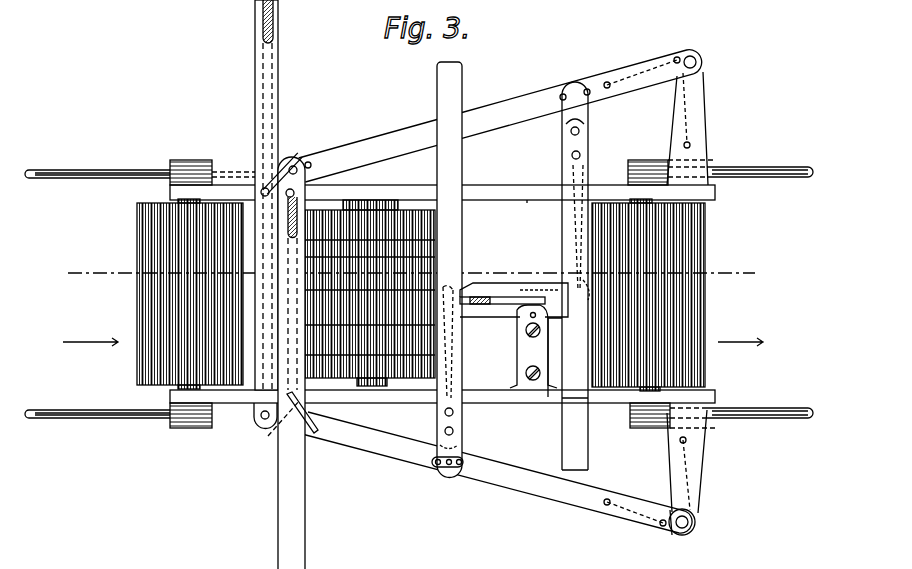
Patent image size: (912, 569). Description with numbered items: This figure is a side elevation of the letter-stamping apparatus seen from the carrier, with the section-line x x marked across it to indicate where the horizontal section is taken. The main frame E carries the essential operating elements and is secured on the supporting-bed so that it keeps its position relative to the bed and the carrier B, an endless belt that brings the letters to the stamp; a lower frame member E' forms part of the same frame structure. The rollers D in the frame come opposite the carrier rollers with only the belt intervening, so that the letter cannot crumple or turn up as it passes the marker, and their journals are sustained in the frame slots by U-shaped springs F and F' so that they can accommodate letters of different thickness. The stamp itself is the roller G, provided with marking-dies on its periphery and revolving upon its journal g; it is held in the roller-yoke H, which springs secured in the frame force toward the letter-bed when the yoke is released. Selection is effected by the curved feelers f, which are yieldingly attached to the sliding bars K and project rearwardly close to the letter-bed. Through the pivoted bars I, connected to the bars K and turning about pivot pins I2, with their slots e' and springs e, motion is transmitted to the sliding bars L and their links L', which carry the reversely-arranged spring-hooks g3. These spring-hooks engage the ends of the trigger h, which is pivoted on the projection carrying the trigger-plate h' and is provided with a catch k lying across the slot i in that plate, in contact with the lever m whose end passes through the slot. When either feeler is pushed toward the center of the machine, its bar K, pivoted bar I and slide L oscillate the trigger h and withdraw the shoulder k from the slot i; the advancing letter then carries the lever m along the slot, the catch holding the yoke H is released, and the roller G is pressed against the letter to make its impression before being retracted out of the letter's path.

The section-line x is at (409, 275).
The roller D is at (167, 305).
The roller-stamp G is at (410, 380).
The main frame E is at (442, 185).
The lower frame beam E' is at (442, 410).
The roller-yoke H is at (527, 199).
The U-shaped spring F is at (143, 181).
The lower shaft F' is at (118, 409).
The pivoted bar I is at (500, 116).
The slot in arm e' is at (642, 72).
The sliding bar L is at (497, 450).
The link L' is at (702, 303).
The spring e is at (706, 291).
The pivot pin I2 is at (700, 66).
The sliding bar K is at (284, 292).
The feeler f is at (286, 298).
The lever m is at (477, 295).
The slot i is at (500, 297).
The trigger-plate h' is at (532, 273).
The journal g is at (545, 290).
The carrier B is at (585, 280).
The spring-hook g3 is at (453, 342).
The catch k is at (506, 312).
The trigger h is at (533, 353).